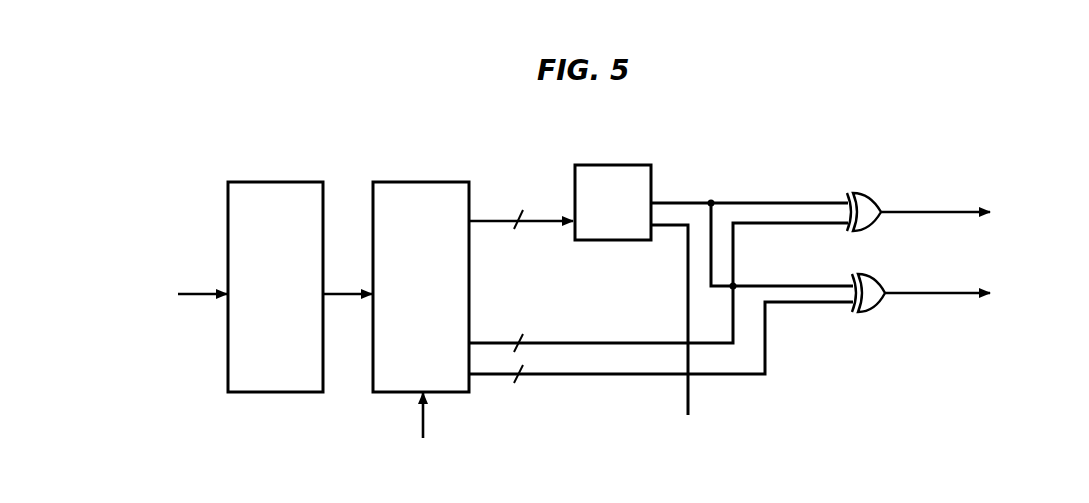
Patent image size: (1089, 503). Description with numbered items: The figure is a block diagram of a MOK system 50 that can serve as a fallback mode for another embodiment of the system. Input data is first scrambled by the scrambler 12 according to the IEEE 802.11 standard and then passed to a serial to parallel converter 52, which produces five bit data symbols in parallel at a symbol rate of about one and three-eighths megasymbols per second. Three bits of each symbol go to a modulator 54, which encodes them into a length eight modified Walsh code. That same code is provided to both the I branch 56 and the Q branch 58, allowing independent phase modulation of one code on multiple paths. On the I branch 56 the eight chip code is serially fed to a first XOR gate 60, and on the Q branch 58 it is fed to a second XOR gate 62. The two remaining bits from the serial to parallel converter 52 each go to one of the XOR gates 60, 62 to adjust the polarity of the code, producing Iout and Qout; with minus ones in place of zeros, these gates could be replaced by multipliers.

The MOK system 50 is at (968, 147).
The scrambler 12 is at (274, 182).
The serial to parallel converter 52 is at (420, 182).
The modulator 54 is at (612, 165).
The I branch 56 is at (765, 203).
The Q branch 58 is at (806, 286).
The first XOR gate 60 is at (861, 195).
The second XOR gate 62 is at (864, 311).